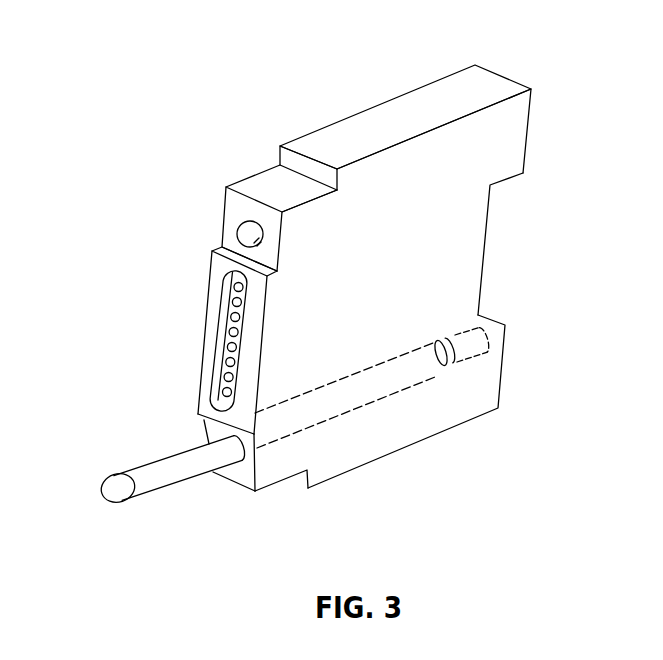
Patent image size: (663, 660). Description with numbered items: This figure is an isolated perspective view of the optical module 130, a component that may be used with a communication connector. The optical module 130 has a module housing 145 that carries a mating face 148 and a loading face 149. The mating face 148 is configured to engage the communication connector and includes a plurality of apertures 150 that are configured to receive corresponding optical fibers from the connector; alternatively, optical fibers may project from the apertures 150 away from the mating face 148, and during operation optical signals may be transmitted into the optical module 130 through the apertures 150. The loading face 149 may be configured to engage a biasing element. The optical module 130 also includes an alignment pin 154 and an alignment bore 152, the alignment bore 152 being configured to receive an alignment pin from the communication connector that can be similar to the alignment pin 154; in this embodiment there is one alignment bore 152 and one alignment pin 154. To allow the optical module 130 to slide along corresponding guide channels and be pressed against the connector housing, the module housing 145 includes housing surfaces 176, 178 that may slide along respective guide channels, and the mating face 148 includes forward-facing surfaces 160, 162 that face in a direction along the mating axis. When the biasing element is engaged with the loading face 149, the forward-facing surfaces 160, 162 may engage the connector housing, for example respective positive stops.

The optical module 130 is at (54, 176).
The module housing 145 is at (442, 95).
The housing surface 176 is at (353, 128).
The forward-facing surface 160 is at (296, 159).
The loading face 149 is at (561, 240).
The mating face 148 is at (164, 338).
The alignment bore 152 is at (237, 234).
The apertures 150 is at (233, 302).
The alignment pin 154 is at (167, 487).
The forward-facing surface 162 is at (289, 492).
The housing surface 178 is at (424, 466).